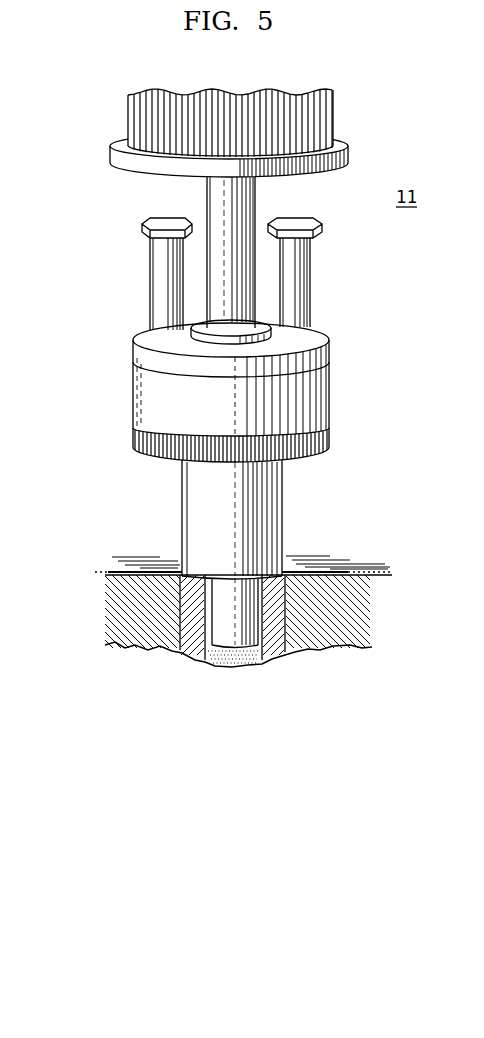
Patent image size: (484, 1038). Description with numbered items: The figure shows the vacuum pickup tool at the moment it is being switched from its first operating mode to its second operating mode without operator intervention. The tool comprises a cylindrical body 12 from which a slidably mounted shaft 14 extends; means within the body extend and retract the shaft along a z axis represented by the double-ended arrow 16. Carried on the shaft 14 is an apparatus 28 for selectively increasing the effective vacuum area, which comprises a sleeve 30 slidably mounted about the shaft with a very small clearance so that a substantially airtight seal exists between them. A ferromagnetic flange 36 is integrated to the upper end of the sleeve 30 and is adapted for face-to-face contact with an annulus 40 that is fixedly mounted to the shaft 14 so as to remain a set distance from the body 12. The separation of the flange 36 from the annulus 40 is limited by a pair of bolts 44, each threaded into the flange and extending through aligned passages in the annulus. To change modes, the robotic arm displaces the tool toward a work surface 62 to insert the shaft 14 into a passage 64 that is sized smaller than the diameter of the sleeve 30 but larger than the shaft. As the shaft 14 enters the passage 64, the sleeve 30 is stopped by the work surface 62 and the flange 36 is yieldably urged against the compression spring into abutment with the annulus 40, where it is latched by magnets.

The cylindrical body 12 is at (333, 115).
The shaft 14 is at (243, 193).
The double-ended arrow 16 is at (350, 283).
The apparatus 28 is at (78, 208).
The sleeve 30 is at (272, 482).
The ferromagnetic flange 36 is at (133, 445).
The annulus 40 is at (318, 382).
The bolts 44 is at (165, 290).
The work surface 62 is at (348, 572).
The passage 64 is at (248, 666).